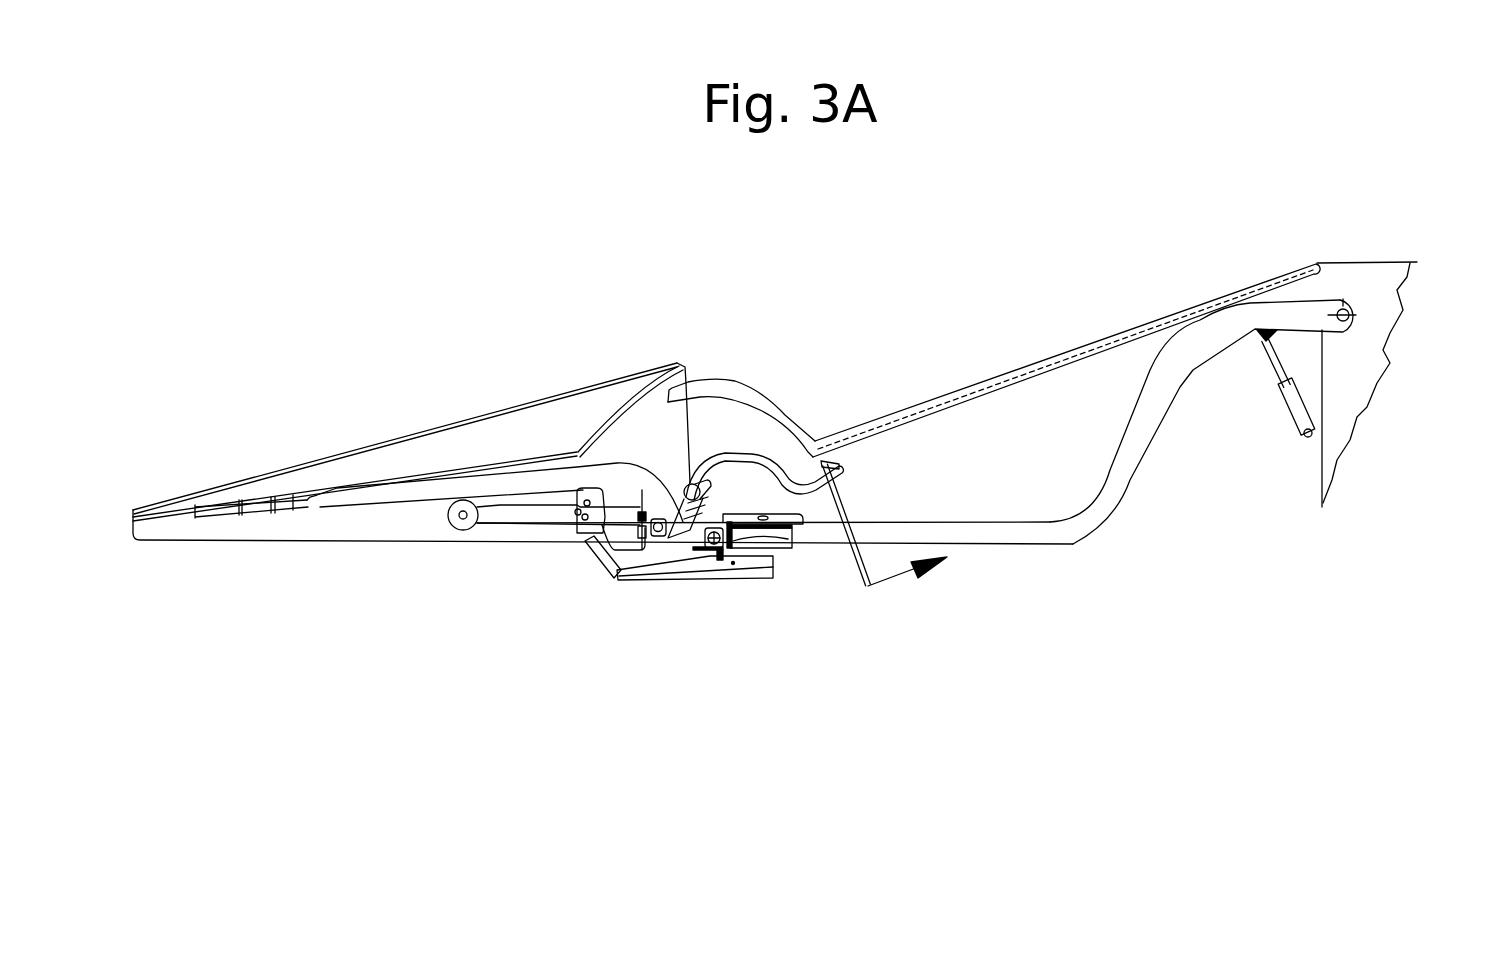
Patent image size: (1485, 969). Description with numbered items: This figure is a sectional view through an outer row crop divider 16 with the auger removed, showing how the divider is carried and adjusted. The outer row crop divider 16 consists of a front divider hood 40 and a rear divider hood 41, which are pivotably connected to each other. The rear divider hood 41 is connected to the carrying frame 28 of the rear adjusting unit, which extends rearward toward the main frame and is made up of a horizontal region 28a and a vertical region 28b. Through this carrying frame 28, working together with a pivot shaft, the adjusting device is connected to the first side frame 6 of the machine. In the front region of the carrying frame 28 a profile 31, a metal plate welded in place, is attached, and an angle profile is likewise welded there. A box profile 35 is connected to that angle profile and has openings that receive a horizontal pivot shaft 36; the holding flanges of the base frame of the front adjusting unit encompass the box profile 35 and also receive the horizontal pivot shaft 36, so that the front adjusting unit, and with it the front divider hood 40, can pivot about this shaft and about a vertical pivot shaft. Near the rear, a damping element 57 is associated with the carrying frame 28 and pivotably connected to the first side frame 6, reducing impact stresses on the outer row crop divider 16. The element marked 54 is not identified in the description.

The first side frame 6 is at (1380, 337).
The outer row crop divider 16 is at (748, 378).
The carrying frame 28 is at (1131, 474).
The horizontal region 28a is at (964, 525).
The vertical region 28b is at (1142, 403).
The profile 31 is at (836, 517).
The box profile 35 is at (722, 560).
The horizontal pivot shaft 36 is at (702, 557).
The front divider hood 40 is at (378, 452).
The rear divider hood 41 is at (1027, 420).
The locking mechanism 54 is at (681, 480).
The damping element 57 is at (1304, 411).